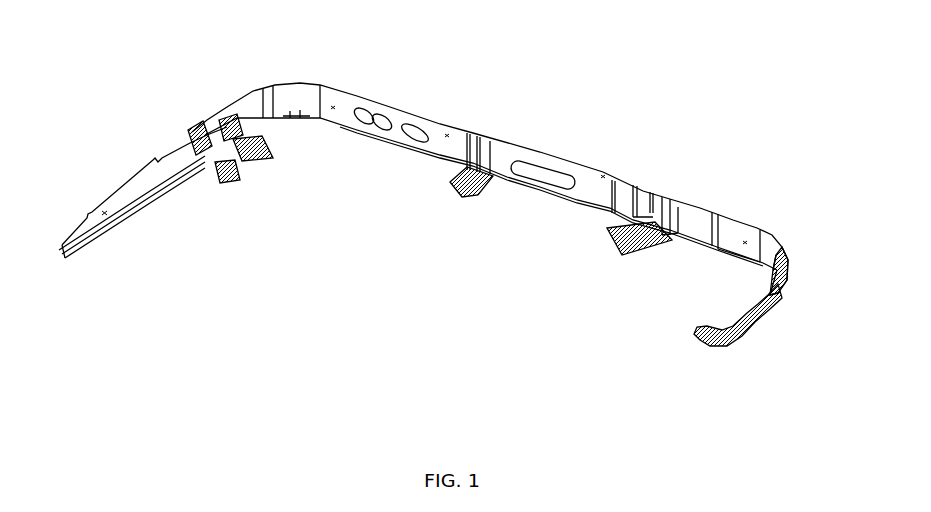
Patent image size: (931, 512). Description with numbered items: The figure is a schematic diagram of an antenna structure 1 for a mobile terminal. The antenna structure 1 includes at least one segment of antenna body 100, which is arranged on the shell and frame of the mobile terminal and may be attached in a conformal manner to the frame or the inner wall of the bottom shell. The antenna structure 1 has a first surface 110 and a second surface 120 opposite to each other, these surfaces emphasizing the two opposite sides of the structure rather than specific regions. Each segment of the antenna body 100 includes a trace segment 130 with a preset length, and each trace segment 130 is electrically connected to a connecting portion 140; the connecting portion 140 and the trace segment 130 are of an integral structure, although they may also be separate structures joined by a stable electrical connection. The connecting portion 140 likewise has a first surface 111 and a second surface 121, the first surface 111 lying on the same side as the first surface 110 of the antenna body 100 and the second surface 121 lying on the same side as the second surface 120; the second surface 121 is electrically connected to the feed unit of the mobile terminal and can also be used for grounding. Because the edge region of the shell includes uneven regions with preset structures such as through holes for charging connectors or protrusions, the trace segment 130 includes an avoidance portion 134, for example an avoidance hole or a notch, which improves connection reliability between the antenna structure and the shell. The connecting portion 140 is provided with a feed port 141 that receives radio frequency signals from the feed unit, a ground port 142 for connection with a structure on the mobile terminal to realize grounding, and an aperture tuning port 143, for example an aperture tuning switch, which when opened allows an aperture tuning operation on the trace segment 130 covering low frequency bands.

The antenna structure 1 is at (442, 207).
The antenna body 100 is at (140, 168).
The first surface 110 is at (770, 302).
The first surface 111 is at (210, 172).
The second surface 120 is at (595, 183).
The second surface 121 is at (206, 170).
The trace segment 130 is at (400, 108).
The avoidance portion 134 is at (710, 212).
The connecting portion 140 is at (237, 122).
The feed port 141 is at (270, 161).
The ground port 142 is at (693, 330).
The aperture tuning port 143 is at (240, 190).